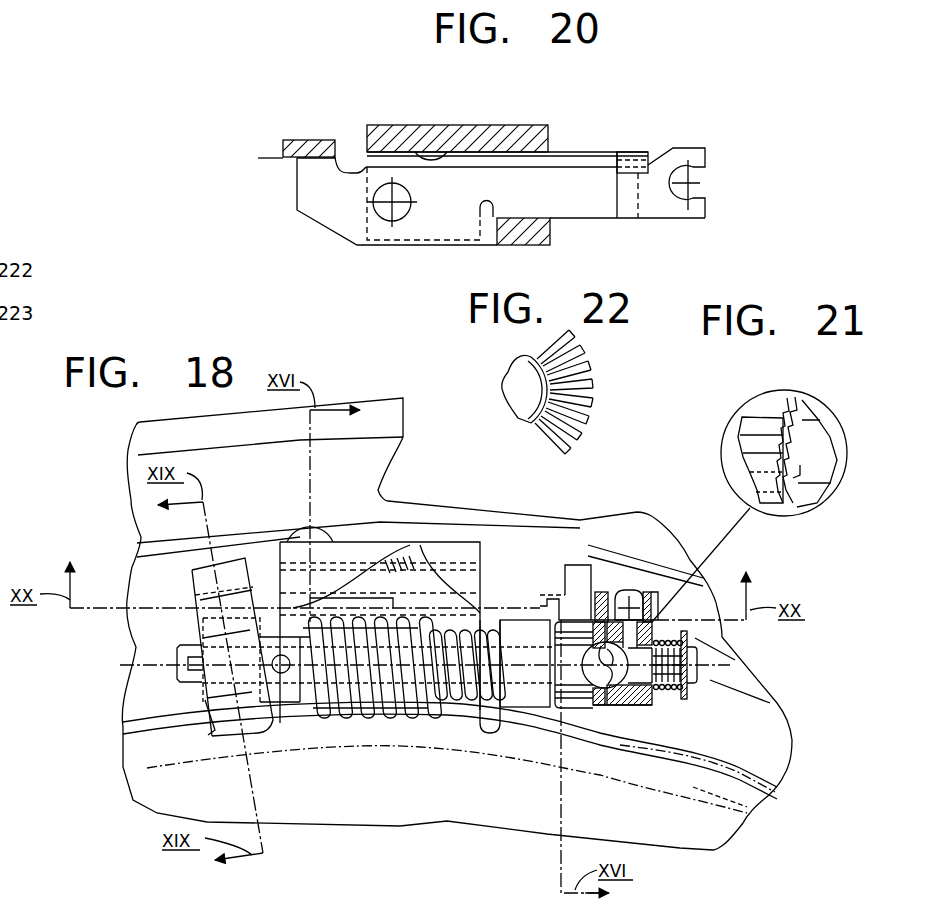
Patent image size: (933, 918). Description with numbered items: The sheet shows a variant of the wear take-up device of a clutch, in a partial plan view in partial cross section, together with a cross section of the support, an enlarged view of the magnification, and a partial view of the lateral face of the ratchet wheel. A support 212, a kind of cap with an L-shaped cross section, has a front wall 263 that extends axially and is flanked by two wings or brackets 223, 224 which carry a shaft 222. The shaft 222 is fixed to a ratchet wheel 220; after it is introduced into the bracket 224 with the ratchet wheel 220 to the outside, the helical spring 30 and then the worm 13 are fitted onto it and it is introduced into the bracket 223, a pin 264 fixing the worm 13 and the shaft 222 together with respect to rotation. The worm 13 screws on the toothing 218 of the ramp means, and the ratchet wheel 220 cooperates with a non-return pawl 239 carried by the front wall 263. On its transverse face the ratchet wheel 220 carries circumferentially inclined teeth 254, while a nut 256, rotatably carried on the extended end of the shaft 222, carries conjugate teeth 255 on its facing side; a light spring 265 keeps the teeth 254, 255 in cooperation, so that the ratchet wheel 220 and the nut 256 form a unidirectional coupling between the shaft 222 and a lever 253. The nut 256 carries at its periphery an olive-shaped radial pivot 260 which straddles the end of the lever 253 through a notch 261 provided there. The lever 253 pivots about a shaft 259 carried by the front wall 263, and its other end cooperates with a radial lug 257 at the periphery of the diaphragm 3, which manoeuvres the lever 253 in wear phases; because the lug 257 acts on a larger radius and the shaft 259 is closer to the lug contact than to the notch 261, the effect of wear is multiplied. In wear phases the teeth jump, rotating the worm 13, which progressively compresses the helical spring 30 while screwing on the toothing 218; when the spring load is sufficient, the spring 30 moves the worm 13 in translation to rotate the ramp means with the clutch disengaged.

In FIG. 18, the diaphragm 3 is at (197, 722).
In FIG. 18, the worm 13 is at (370, 720).
In FIG. 18, the helical spring 30 is at (435, 694).
In FIG. 20, the support 212 is at (381, 120).
In FIG. 18, the toothing 218 is at (307, 718).
In FIG. 22, the ratchet wheel 220 is at (519, 428).
In FIG. 21, the ratchet wheel 220 is at (755, 414).
In FIG. 18, the ratchet wheel 220 is at (573, 692).
In FIG. 18, the shaft 222 is at (642, 680).
In FIG. 18, the bracket 223 is at (209, 728).
In FIG. 18, the bracket 224 is at (520, 700).
In FIG. 20, the non-return pawl 239 is at (648, 163).
In FIG. 18, the non-return pawl 239 is at (573, 618).
In FIG. 20, the lever 253 is at (323, 230).
In FIG. 18, the lever 253 is at (261, 566).
In FIG. 22, the inclined teeth 254 is at (560, 430).
In FIG. 21, the inclined teeth 254 is at (794, 398).
In FIG. 21, the teeth 255 is at (792, 466).
In FIG. 21, the nut 256 is at (817, 416).
In FIG. 18, the nut 256 is at (621, 710).
In FIG. 20, the radial lug 257 is at (306, 140).
In FIG. 18, the radial lug 257 is at (200, 600).
In FIG. 20, the shaft 259 is at (392, 204).
In FIG. 18, the shaft 259 is at (312, 476).
In FIG. 18, the radial pivot 260 is at (638, 592).
In FIG. 20, the notch 261 is at (701, 174).
In FIG. 18, the notch 261 is at (650, 592).
In FIG. 20, the front wall 263 is at (460, 160).
In FIG. 18, the front wall 263 is at (410, 546).
In FIG. 18, the pin 264 is at (277, 672).
In FIG. 18, the light spring 265 is at (655, 685).